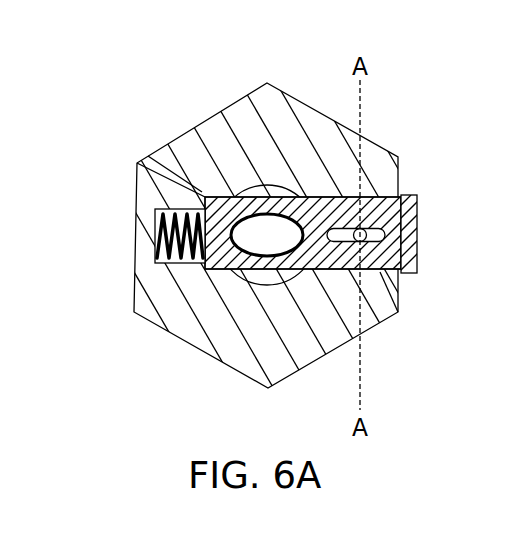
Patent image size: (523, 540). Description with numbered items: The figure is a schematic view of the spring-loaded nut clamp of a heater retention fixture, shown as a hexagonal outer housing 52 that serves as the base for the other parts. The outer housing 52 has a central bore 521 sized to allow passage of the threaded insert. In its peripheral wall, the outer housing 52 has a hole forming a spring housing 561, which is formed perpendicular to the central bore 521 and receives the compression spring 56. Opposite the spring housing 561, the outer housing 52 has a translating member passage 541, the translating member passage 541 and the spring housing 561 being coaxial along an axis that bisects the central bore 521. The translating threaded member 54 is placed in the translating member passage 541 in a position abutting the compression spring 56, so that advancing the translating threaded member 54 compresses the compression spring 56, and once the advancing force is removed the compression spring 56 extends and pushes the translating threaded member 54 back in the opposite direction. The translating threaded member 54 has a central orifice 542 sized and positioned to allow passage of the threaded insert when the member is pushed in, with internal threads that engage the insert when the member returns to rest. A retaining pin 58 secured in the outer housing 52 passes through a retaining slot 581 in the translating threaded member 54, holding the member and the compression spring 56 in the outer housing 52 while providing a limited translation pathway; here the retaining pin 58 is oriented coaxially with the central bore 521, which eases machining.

The outer housing 52 is at (190, 150).
The translating threaded member 54 is at (401, 197).
The translating member passage 541 is at (395, 309).
The central orifice 542 is at (264, 197).
The central bore 521 is at (257, 233).
The compression spring 56 is at (157, 245).
The spring housing 561 is at (157, 215).
The retaining pin 58 is at (367, 197).
The retaining slot 581 is at (357, 228).